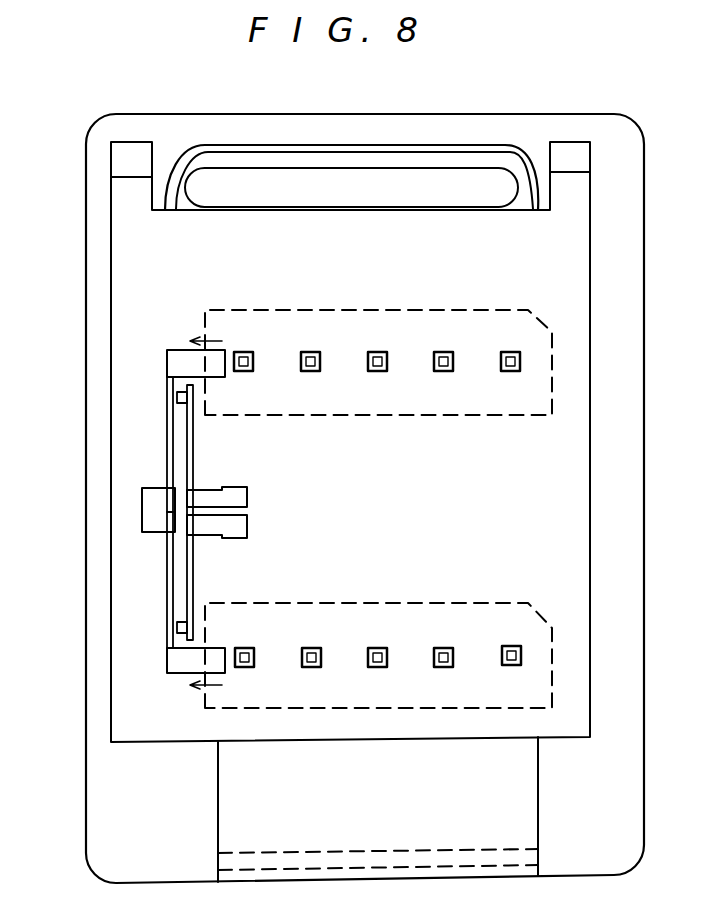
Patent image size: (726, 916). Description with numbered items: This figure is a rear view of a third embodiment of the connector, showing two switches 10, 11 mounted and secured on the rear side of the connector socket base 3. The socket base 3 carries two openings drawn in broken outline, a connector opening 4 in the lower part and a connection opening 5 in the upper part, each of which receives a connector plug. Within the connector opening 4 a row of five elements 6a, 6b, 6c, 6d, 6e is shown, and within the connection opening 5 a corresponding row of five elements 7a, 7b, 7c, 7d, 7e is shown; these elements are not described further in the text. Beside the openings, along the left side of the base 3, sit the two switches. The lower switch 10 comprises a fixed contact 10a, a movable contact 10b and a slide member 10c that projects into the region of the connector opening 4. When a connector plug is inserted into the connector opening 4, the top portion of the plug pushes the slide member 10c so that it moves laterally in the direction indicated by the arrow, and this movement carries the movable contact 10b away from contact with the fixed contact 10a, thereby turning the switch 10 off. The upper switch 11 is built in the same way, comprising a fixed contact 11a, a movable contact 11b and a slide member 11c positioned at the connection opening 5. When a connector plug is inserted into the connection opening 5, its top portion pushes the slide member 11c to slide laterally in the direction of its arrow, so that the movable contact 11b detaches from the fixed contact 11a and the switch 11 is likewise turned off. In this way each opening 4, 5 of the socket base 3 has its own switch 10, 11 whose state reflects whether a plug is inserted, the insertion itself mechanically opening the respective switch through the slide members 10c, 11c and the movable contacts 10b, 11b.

The connector socket base 3 is at (644, 140).
The connector opening 4 is at (552, 652).
The connection opening 5 is at (552, 353).
The sensor 6a is at (514, 646).
The sensor 6b is at (452, 648).
The sensor 6c is at (386, 648).
The sensor 6d is at (321, 648).
The sensor 6e is at (254, 648).
The sensor 7a is at (511, 351).
The sensor 7b is at (444, 351).
The sensor 7c is at (378, 351).
The sensor 7d is at (311, 351).
The sensor 7e is at (244, 351).
The switch 10 is at (250, 636).
The fixed contact 10a is at (196, 622).
The movable contact 10b is at (167, 632).
The slide member 10c is at (180, 673).
The switch 11 is at (250, 408).
The fixed contact 11a is at (194, 402).
The movable contact 11b is at (167, 398).
The slide member 11c is at (180, 350).